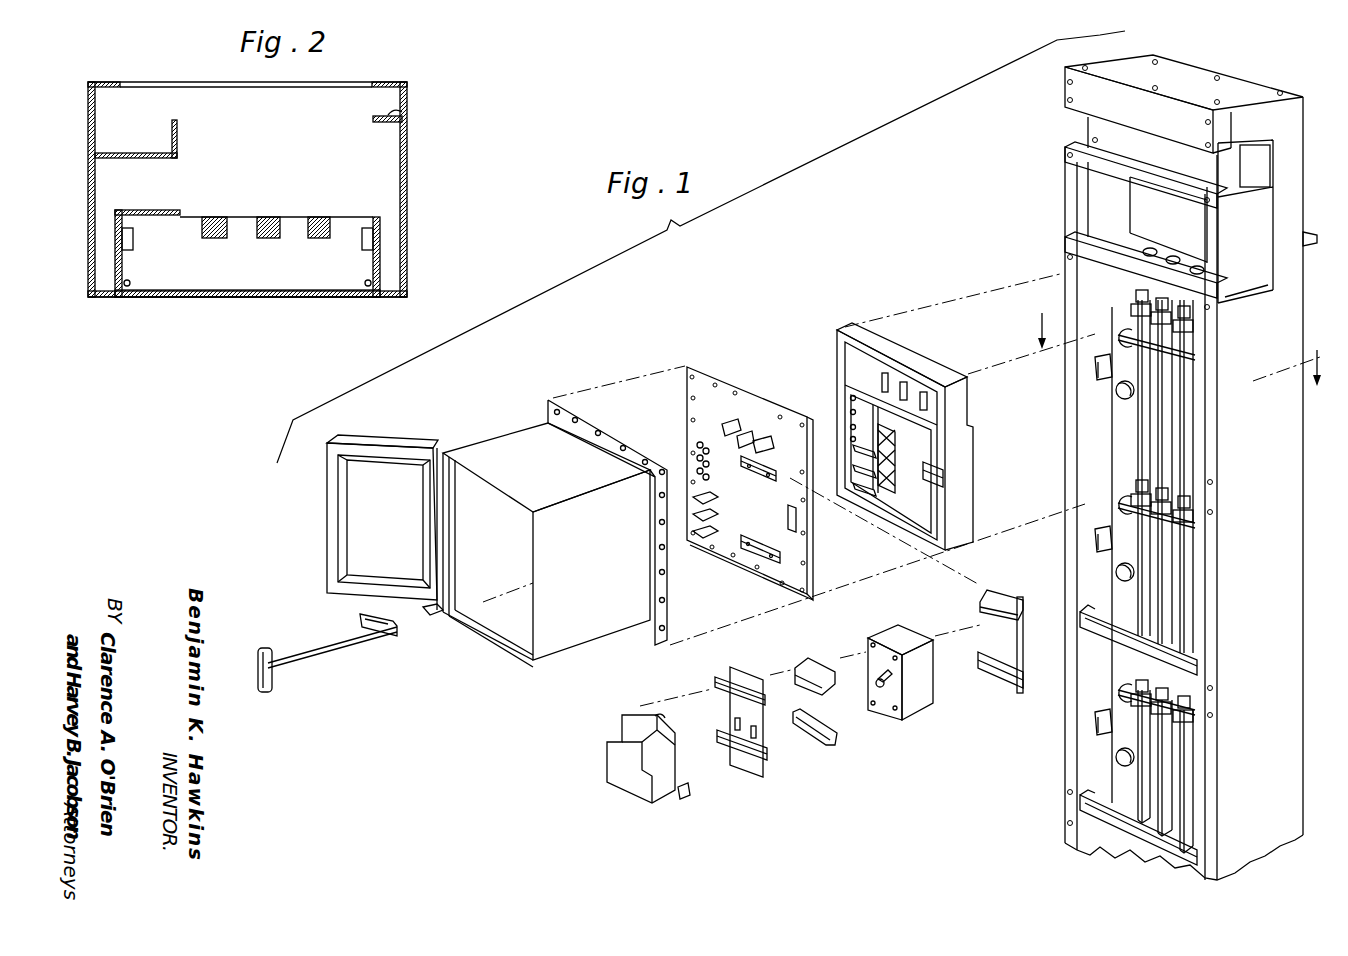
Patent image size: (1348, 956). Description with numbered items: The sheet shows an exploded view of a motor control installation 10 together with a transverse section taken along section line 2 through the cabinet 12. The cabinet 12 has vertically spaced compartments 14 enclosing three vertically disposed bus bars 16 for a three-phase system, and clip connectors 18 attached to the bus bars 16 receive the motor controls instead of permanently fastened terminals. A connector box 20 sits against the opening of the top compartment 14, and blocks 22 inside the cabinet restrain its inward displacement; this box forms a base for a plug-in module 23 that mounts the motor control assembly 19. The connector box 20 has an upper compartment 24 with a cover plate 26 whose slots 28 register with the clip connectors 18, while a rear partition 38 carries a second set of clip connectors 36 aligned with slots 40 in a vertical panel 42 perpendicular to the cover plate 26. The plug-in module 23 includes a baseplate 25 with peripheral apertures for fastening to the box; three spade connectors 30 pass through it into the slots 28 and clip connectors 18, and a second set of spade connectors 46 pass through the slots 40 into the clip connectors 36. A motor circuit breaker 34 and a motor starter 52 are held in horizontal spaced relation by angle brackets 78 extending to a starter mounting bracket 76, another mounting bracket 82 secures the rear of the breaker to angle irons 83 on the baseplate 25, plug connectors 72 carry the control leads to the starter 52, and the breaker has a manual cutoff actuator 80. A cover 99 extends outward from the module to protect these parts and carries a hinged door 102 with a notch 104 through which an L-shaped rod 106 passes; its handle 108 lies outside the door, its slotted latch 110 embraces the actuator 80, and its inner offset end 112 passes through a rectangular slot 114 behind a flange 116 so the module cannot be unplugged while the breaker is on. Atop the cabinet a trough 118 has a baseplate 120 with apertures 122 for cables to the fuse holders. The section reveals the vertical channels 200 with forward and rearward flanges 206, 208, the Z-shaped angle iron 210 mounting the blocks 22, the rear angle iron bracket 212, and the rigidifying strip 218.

In FIG. 1, the section line 2— 2 is at (1167, 364).
In FIG. 1, the motor control installation 10 is at (1160, 467).
In FIG. 2, the cabinet 12 is at (407, 197).
In FIG. 1, the cabinet 12 is at (1172, 467).
In FIG. 1, the compartments 14 is at (1185, 437).
In FIG. 2, the bus bars 16 is at (306, 238).
In FIG. 1, the bus bars 16 is at (1199, 576).
In FIG. 1, the clip connectors 18 is at (1133, 315).
In FIG. 1, the motor control assembly 19 is at (827, 720).
In FIG. 1, the connector box 20 is at (902, 436).
In FIG. 2, the blocks 22 is at (133, 242).
In FIG. 1, the blocks 22 is at (1093, 372).
In FIG. 1, the plug-in module 23 is at (756, 464).
In FIG. 1, the upper compartment 24 is at (902, 436).
In FIG. 1, the baseplate 25 is at (797, 550).
In FIG. 1, the cover plate 26 is at (850, 360).
In FIG. 1, the slots 28 is at (888, 375).
In FIG. 1, the spade connectors 30 is at (762, 440).
In FIG. 1, the motor circuit breaker 34 is at (882, 691).
In FIG. 1, the clip connectors 36 is at (900, 438).
In FIG. 1, the rear partition 38 is at (923, 507).
In FIG. 1, the slots 40 is at (857, 483).
In FIG. 1, the vertical panel 42 is at (860, 413).
In FIG. 1, the spade connectors 46 is at (712, 522).
In FIG. 1, the motor starter 52 is at (665, 773).
In FIG. 1, the plug connectors 72 is at (704, 472).
In FIG. 1, the starter mounting bracket 76 is at (767, 742).
In FIG. 1, the angle brackets 78 is at (820, 672).
In FIG. 1, the manual cutoff actuator 80 is at (880, 686).
In FIG. 1, the mounting bracket 82 is at (1018, 628).
In FIG. 1, the angle irons 83 is at (770, 460).
In FIG. 1, the cover 99 is at (623, 597).
In FIG. 1, the door 102 is at (390, 440).
In FIG. 1, the notch 104 is at (353, 517).
In FIG. 1, the L-shaped rod 106 is at (353, 640).
In FIG. 1, the handle 108 is at (268, 692).
In FIG. 1, the slotted latch 110 is at (360, 619).
In FIG. 1, the inner offset end 112 is at (443, 617).
In FIG. 1, the rectangular slot 114 is at (788, 517).
In FIG. 1, the flange 116 is at (948, 457).
In FIG. 1, the trough 118 is at (1088, 213).
In FIG. 1, the baseplate 120 is at (1165, 249).
In FIG. 1, the apertures 122 is at (1157, 253).
In FIG. 2, the vertical channels 200 is at (88, 198).
In FIG. 2, the forward flange 206 is at (110, 298).
In FIG. 2, the rearward flange 208 is at (109, 80).
In FIG. 2, the Z-shaped angle iron 210 is at (158, 210).
In FIG. 2, the rear angle iron bracket 212 is at (120, 152).
In FIG. 2, the rigidifying strip 218 is at (407, 117).